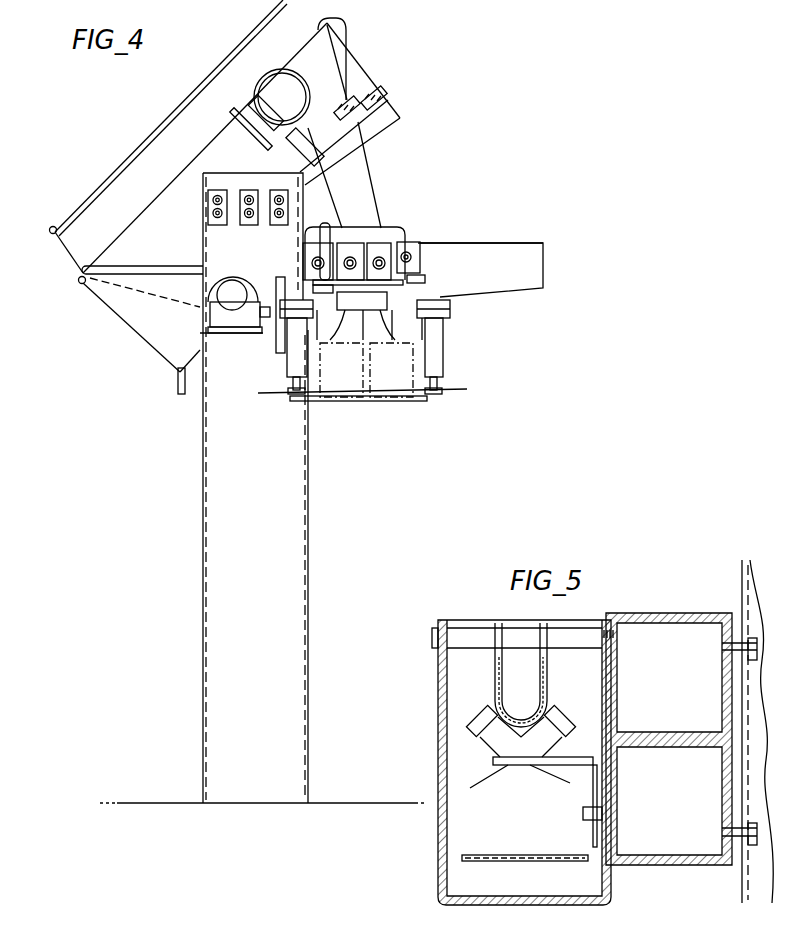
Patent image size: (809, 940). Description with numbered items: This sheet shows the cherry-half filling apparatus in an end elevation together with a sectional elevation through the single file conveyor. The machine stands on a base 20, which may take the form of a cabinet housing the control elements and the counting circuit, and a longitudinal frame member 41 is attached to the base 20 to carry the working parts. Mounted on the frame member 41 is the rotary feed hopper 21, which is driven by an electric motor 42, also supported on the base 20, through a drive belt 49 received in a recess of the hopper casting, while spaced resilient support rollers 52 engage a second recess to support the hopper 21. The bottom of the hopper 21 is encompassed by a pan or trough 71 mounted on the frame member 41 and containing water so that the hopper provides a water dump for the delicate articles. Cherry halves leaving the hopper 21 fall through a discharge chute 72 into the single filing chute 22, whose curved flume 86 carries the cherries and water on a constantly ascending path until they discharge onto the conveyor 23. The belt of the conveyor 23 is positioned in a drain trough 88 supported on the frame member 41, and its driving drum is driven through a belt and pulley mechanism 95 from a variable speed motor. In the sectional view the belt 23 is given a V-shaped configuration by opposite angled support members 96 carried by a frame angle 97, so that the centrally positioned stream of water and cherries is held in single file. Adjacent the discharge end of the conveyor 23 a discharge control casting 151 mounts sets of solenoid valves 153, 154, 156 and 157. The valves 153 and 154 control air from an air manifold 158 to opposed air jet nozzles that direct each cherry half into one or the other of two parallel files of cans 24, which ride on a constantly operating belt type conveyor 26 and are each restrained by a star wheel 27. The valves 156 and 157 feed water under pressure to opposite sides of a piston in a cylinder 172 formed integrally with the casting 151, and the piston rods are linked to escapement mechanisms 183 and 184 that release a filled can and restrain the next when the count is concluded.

In FIG. 4, the base 20 is at (260, 582).
In FIG. 5, the base 20 is at (771, 699).
In FIG. 4, the rotary feed hopper 21 is at (183, 110).
In FIG. 4, the single filing chute 22 is at (550, 262).
In FIG. 5, the single filing chute 22 is at (543, 670).
In FIG. 5, the conveyor 23 is at (553, 712).
In FIG. 4, the containers or cans 24 is at (383, 385).
In FIG. 4, the belt type conveyor 26 is at (417, 400).
In FIG. 4, the star wheel 27 is at (467, 392).
In FIG. 5, the frame member 41 is at (673, 616).
In FIG. 4, the electric motor 42 is at (272, 106).
In FIG. 4, the drive belt 49 is at (341, 114).
In FIG. 4, the support rollers 52 is at (384, 100).
In FIG. 4, the pan or trough 71 is at (128, 313).
In FIG. 4, the discharge chute 72 is at (368, 188).
In FIG. 4, the curved trough or flume 86 is at (527, 245).
In FIG. 5, the drain trough 88 is at (437, 858).
In FIG. 4, the belt and pulley mechanism 95 is at (281, 278).
In FIG. 4, the angled support members 96 is at (242, 288).
In FIG. 5, the angled support members 96 is at (490, 737).
In FIG. 5, the frame angle 97 is at (583, 762).
In FIG. 4, the discharge control casting 151 is at (385, 330).
In FIG. 4, the solenoid valve 153 is at (315, 248).
In FIG. 4, the solenoid valve 154 is at (416, 245).
In FIG. 4, the solenoid valve 156 is at (350, 250).
In FIG. 4, the solenoid valve 157 is at (378, 250).
In FIG. 4, the air manifold 158 is at (413, 268).
In FIG. 4, the cylinder 172 is at (346, 305).
In FIG. 4, the escapement mechanism 183 is at (432, 356).
In FIG. 4, the escapement mechanism 184 is at (296, 364).